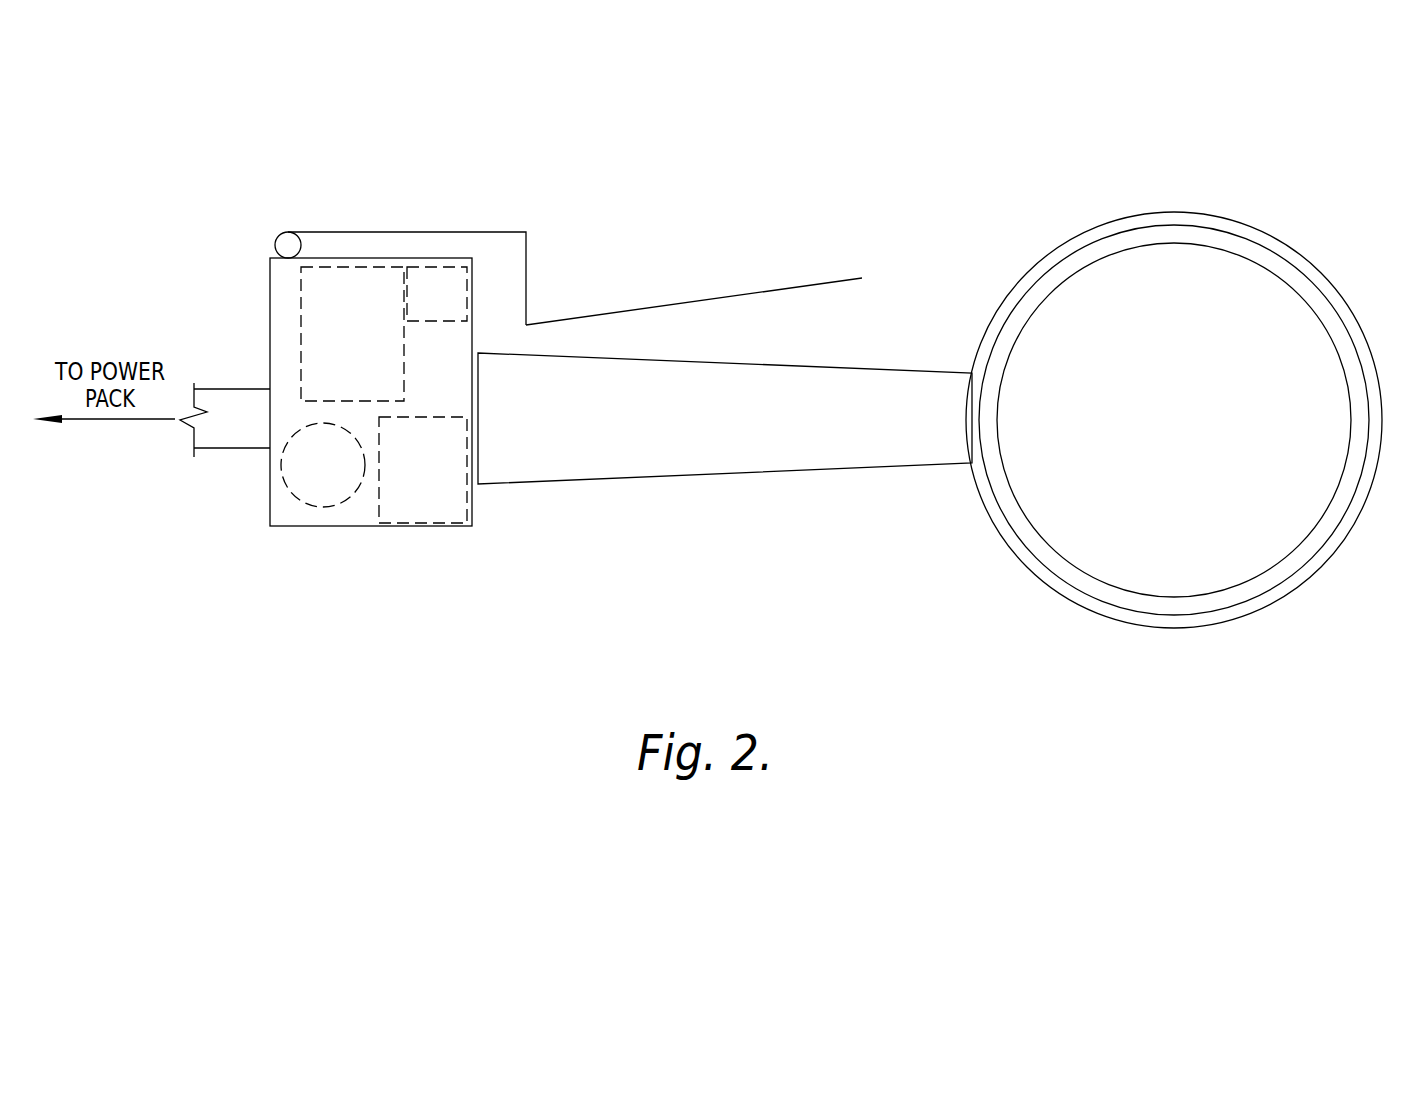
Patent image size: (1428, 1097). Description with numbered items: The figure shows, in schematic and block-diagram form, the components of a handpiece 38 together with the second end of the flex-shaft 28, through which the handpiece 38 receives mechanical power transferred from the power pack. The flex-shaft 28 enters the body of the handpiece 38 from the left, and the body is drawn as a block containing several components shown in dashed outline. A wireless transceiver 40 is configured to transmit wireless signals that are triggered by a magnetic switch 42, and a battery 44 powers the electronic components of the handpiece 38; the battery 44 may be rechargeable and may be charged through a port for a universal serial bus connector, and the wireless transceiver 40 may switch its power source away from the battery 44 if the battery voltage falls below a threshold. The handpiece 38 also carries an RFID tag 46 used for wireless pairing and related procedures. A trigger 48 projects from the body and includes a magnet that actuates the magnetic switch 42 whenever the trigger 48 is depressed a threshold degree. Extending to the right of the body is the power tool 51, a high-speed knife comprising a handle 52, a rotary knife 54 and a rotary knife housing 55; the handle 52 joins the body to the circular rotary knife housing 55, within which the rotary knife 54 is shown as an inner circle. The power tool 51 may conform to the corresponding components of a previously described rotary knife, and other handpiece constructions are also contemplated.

The flex-shaft 28 is at (222, 438).
The handpiece 38 is at (833, 213).
The wireless transceiver 40 is at (340, 277).
The magnetic switch 42 is at (432, 278).
The battery 44 is at (450, 510).
The RFID tag 46 is at (310, 498).
The trigger 48 is at (565, 320).
The power tool 51 is at (1095, 626).
The handle 52 is at (684, 477).
The rotary knife 54 is at (1060, 283).
The rotary knife housing 55 is at (1189, 208).